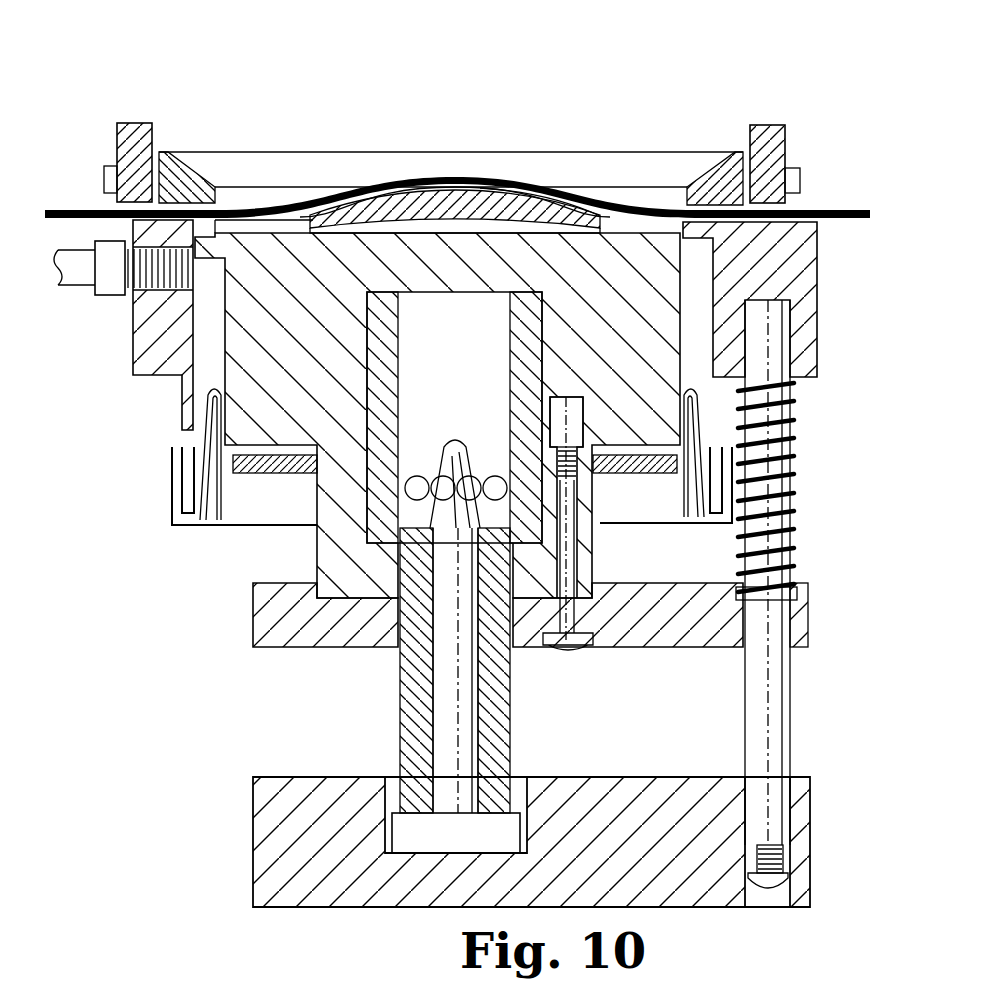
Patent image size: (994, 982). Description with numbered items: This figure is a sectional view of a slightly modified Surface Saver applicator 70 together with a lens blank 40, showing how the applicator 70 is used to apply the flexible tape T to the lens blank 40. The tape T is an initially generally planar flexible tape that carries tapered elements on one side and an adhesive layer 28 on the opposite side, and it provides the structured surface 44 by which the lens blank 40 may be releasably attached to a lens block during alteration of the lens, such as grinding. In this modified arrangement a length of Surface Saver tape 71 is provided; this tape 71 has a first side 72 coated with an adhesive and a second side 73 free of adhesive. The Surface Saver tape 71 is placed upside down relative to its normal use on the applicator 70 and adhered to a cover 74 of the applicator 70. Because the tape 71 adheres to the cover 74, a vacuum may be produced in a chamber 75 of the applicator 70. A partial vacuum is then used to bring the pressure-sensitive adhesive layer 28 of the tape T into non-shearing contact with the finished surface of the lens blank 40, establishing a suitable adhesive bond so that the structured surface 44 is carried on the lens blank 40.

The applicator 70 is at (670, 124).
The Surface Saver tape 71 is at (822, 203).
The first side 72 is at (63, 208).
The second side 73 is at (80, 222).
The cover 74 is at (153, 348).
The chamber 75 is at (283, 218).
The adhesive layer 28 is at (509, 190).
The lens blank 40 is at (545, 198).
The structured surface 44 is at (460, 180).
The flexible tape T is at (376, 168).